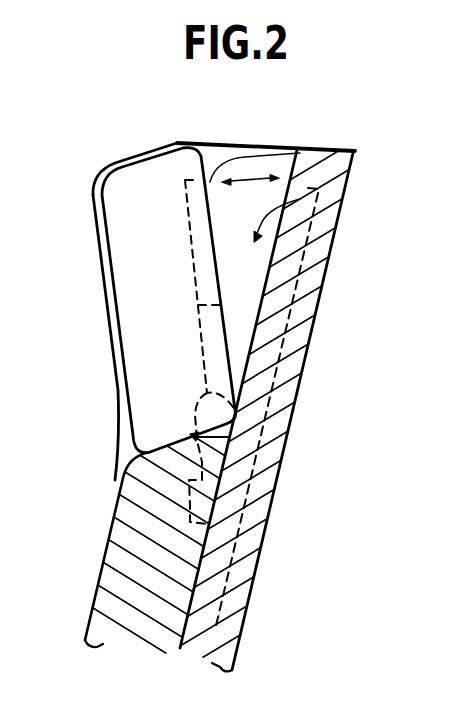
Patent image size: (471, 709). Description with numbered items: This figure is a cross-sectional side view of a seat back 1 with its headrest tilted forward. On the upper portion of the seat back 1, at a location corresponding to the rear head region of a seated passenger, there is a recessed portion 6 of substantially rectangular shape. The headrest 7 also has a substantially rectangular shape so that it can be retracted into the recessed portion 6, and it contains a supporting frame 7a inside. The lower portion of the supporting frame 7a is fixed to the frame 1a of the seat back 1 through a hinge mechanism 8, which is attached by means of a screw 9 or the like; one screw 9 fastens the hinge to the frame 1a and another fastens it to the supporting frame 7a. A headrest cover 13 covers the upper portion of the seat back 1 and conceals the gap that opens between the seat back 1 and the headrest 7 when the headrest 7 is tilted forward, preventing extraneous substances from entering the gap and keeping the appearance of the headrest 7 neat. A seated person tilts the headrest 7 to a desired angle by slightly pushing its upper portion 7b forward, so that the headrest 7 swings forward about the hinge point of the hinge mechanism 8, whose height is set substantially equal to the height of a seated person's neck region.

The seat back 1 is at (317, 318).
The frame of the seat back 1a is at (305, 245).
The recessed portion 6 is at (300, 199).
The headrest 7 is at (116, 380).
The supporting frame 7a is at (190, 252).
The upper portion of the headrest 7b is at (123, 183).
The hinge mechanism 8 is at (230, 437).
The screw 9 is at (186, 495).
The headrest cover 13 is at (235, 145).